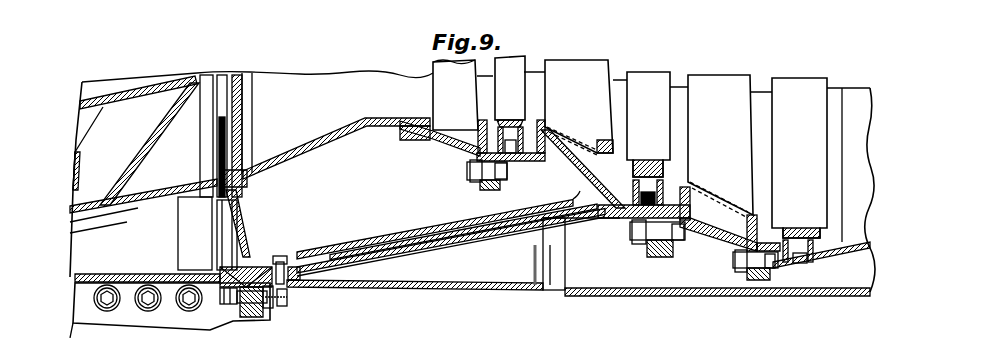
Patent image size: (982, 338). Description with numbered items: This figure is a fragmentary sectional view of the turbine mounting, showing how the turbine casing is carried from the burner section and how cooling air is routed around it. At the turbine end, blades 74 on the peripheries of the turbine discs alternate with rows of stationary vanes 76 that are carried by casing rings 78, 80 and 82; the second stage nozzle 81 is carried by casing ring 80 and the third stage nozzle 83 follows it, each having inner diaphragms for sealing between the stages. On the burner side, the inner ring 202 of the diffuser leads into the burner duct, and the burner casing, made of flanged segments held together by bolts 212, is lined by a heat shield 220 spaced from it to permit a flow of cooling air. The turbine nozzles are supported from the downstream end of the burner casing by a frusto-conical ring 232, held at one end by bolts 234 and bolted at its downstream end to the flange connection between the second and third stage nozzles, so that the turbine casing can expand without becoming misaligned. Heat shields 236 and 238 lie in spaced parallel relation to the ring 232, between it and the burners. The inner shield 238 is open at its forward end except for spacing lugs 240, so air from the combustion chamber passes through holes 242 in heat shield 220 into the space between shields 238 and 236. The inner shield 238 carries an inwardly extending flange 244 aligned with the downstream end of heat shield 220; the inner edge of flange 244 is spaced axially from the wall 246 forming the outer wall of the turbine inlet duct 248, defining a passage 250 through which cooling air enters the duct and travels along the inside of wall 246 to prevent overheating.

The blades 74 is at (517, 72).
The stationary vanes 76 is at (462, 103).
The casing ring 78 is at (453, 152).
The casing ring 80 is at (557, 173).
The second stage nozzle 81 is at (580, 110).
The casing ring 82 is at (720, 237).
The third stage nozzle 83 is at (726, 143).
The inner ring 202 is at (169, 330).
The bolts 212 is at (148, 293).
The heat shield 220 is at (135, 220).
The ring 232 is at (434, 248).
The bolts 234 is at (288, 300).
The heat shield 236 is at (470, 225).
The inner heat shield 238 is at (370, 237).
The spacing lugs 240 is at (276, 266).
The holes 242 is at (108, 178).
The flange 244 is at (243, 257).
The wall 246 is at (297, 147).
The turbine inlet duct 248 is at (300, 105).
The passage 250 is at (237, 103).